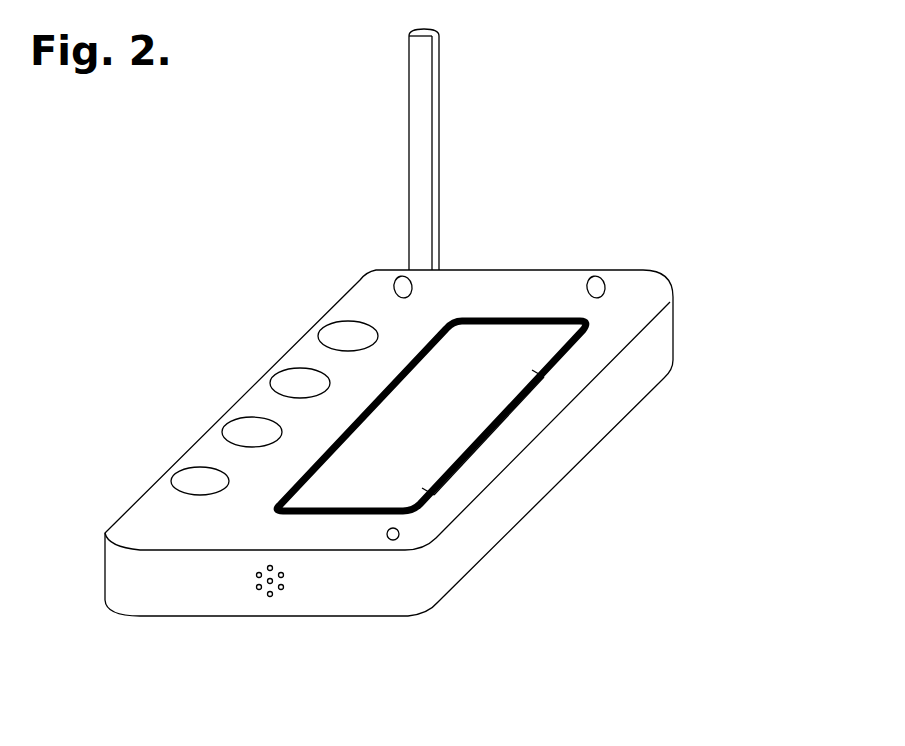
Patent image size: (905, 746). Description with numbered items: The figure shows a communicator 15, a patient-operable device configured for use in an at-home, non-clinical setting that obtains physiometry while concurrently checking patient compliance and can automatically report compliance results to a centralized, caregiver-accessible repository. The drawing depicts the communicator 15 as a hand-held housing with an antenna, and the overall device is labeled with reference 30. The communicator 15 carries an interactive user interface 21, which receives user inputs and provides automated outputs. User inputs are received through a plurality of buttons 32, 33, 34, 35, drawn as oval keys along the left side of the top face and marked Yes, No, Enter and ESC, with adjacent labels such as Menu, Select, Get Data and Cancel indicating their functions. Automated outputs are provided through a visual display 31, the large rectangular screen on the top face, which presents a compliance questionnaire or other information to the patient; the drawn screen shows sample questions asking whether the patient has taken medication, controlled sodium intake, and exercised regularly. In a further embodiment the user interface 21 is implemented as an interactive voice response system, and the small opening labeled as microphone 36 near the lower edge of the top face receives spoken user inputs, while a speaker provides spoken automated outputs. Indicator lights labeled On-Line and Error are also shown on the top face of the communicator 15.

The patient monitoring device 30 is at (119, 115).
The user interface 21 is at (603, 350).
The communicator 15 is at (268, 617).
The visual display 31 is at (474, 451).
The button 32 is at (318, 337).
The button 33 is at (270, 385).
The button 34 is at (222, 432).
The button 35 is at (171, 482).
The microphone 36 is at (410, 535).